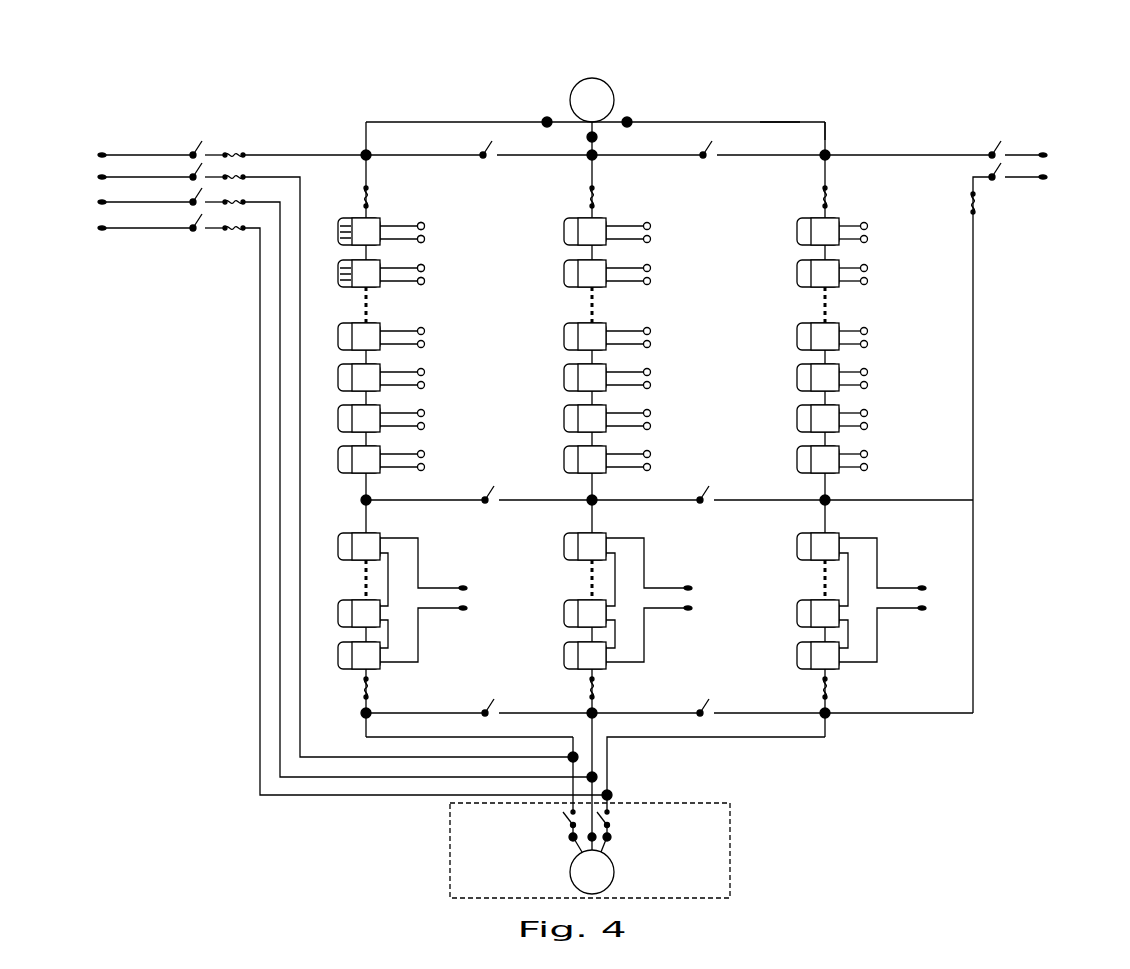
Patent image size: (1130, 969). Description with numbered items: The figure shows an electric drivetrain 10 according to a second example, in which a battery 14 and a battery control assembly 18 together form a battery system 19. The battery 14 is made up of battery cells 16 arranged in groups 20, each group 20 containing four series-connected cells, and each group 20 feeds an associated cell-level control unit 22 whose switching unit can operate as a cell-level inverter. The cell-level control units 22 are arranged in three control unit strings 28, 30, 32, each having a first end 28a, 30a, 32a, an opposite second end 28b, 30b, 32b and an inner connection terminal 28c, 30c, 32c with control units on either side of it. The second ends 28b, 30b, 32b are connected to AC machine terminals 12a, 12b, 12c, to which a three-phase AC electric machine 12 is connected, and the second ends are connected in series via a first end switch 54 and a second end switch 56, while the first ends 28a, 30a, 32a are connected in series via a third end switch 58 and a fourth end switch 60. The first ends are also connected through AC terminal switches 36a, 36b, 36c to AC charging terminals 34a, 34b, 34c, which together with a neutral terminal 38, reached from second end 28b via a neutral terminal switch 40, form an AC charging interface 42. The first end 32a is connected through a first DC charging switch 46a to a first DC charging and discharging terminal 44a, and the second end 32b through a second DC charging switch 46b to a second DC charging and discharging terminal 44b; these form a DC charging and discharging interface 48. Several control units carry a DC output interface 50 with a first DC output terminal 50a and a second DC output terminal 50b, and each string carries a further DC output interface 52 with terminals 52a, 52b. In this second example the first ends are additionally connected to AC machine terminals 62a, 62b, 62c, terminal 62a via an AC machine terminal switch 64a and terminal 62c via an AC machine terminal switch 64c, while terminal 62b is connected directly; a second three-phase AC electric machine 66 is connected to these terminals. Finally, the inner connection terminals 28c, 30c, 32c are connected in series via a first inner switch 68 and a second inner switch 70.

The electric drivetrain 10 is at (855, 86).
The AC electric machine 12 is at (588, 97).
The AC machine terminal 12a is at (547, 117).
The AC machine terminal 12b is at (597, 132).
The AC machine terminal 12c is at (631, 119).
The battery 14 is at (719, 100).
The battery cells 16 is at (338, 282).
The battery control assembly 18 is at (784, 110).
The battery system 19 is at (839, 122).
The group of battery cells 20 is at (519, 446).
The cell-level control unit 22 is at (799, 656).
The first control unit string 28 is at (340, 194).
The first end of first control unit string 28a is at (361, 714).
The second end of first control unit string 28b is at (365, 150).
The inner connection terminal of first control unit string 28c is at (370, 503).
The second control unit string 30 is at (629, 176).
The first end of second control unit string 30a is at (597, 712).
The second end of second control unit string 30b is at (590, 158).
The inner connection terminal of second control unit string 30c is at (595, 503).
The third control unit string 32 is at (845, 205).
The first end of third control unit string 32a is at (828, 719).
The second end of third control unit string 32b is at (823, 158).
The inner connection terminal of third control unit string 32c is at (830, 500).
The AC charging terminal 34a is at (313, 461).
The AC charging terminal 34b is at (323, 483).
The AC charging terminal 34c is at (331, 505).
The AC terminal switch 36a is at (189, 186).
The AC terminal switch 36b is at (192, 210).
The AC terminal switch 36c is at (192, 234).
The neutral terminal 38 is at (153, 155).
The neutral terminal switch 40 is at (205, 146).
The AC charging interface 42 is at (56, 128).
The first DC charging and discharging terminal 44a is at (1032, 439).
The second DC charging and discharging terminal 44b is at (1049, 156).
The first DC charging switch 46a is at (1005, 188).
The second DC charging switch 46b is at (1011, 134).
The DC charging and discharging interface 48 is at (1055, 190).
The DC output interface 50 is at (435, 231).
The first DC output terminal 50a is at (430, 226).
The second DC output terminal 50b is at (431, 240).
The further DC output interface 52 is at (472, 599).
The first DC output terminal 52a is at (465, 587).
The second DC output terminal 52b is at (465, 610).
The first end switch 54 is at (480, 143).
The second end switch 56 is at (699, 164).
The third end switch 58 is at (482, 704).
The fourth end switch 60 is at (716, 700).
The AC machine terminal 62a is at (570, 840).
The AC machine terminal 62b is at (579, 846).
The AC machine terminal 62c is at (612, 840).
The AC machine terminal switch 64a is at (556, 811).
The AC machine terminal switch 64c is at (618, 815).
The AC electric machine 66 is at (606, 870).
The first inner switch 68 is at (498, 506).
The second inner switch 70 is at (702, 509).